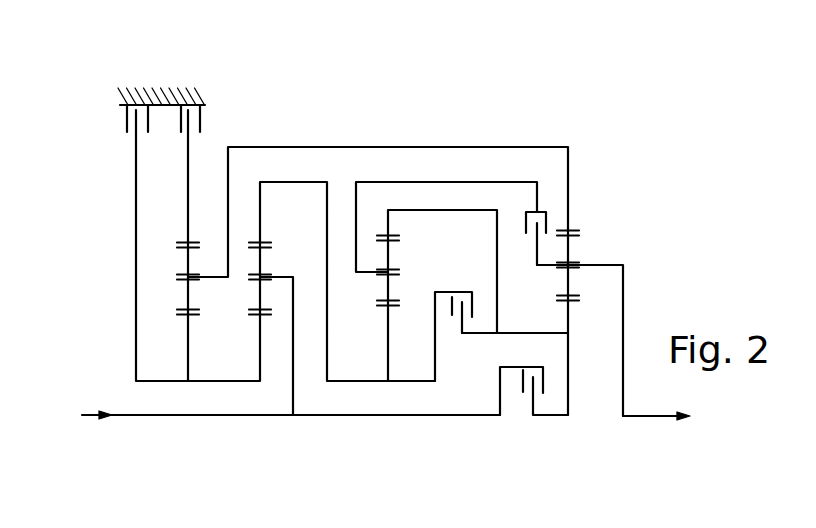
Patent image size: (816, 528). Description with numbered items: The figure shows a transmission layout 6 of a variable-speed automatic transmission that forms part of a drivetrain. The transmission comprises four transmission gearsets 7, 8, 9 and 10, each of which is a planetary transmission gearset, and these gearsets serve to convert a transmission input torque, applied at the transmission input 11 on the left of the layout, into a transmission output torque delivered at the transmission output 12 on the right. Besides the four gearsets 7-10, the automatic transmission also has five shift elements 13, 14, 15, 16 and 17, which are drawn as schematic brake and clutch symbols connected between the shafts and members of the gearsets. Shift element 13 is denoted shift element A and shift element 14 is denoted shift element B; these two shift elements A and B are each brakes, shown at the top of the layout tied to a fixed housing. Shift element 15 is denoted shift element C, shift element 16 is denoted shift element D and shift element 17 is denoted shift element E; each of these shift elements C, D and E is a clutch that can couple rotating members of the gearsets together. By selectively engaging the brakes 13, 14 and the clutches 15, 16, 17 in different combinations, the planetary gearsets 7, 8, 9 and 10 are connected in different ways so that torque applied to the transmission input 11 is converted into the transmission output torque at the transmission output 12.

The transmission layout 6 is at (110, 295).
The first transmission gearset 7 is at (196, 227).
The second transmission gearset 8 is at (276, 227).
The third transmission gearset 9 is at (372, 312).
The fourth transmission gearset 10 is at (582, 220).
The transmission input 11 is at (150, 417).
The transmission output 12 is at (648, 417).
The shift element A 13 is at (112, 100).
The shift element B 14 is at (218, 100).
The shift element C 15 is at (522, 400).
The shift element D 16 is at (548, 190).
The shift element E 17 is at (453, 282).